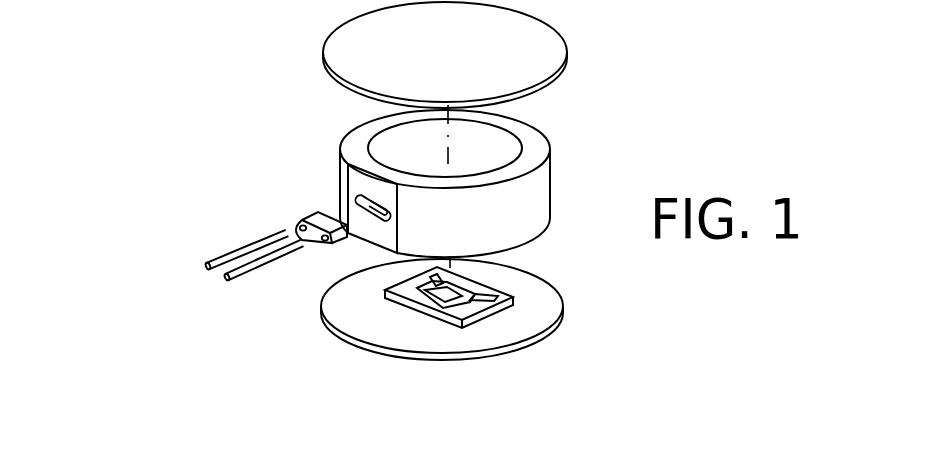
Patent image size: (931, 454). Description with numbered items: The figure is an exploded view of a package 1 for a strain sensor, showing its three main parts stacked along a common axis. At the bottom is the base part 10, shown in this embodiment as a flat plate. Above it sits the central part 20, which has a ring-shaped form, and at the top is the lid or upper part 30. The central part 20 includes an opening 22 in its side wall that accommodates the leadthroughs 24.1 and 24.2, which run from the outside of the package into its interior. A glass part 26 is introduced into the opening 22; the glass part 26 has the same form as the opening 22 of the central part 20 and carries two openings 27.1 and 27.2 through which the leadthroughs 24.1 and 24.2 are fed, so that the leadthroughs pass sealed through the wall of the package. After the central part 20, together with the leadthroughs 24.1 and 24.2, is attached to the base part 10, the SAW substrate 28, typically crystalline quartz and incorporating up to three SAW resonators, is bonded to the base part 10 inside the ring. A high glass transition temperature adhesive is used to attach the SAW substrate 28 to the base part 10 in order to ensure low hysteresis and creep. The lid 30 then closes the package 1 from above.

The package 1 is at (630, 133).
The base part 10 is at (537, 340).
The central part 20 is at (533, 213).
The opening 22 is at (370, 221).
The leadthrough 24.1 is at (207, 268).
The leadthrough 24.2 is at (223, 280).
The glass part 26 is at (318, 215).
The first contact opening 27.1 is at (300, 228).
The second contact opening 27.2 is at (323, 240).
The SAW substrate 28 is at (483, 291).
The lid 30 is at (567, 63).